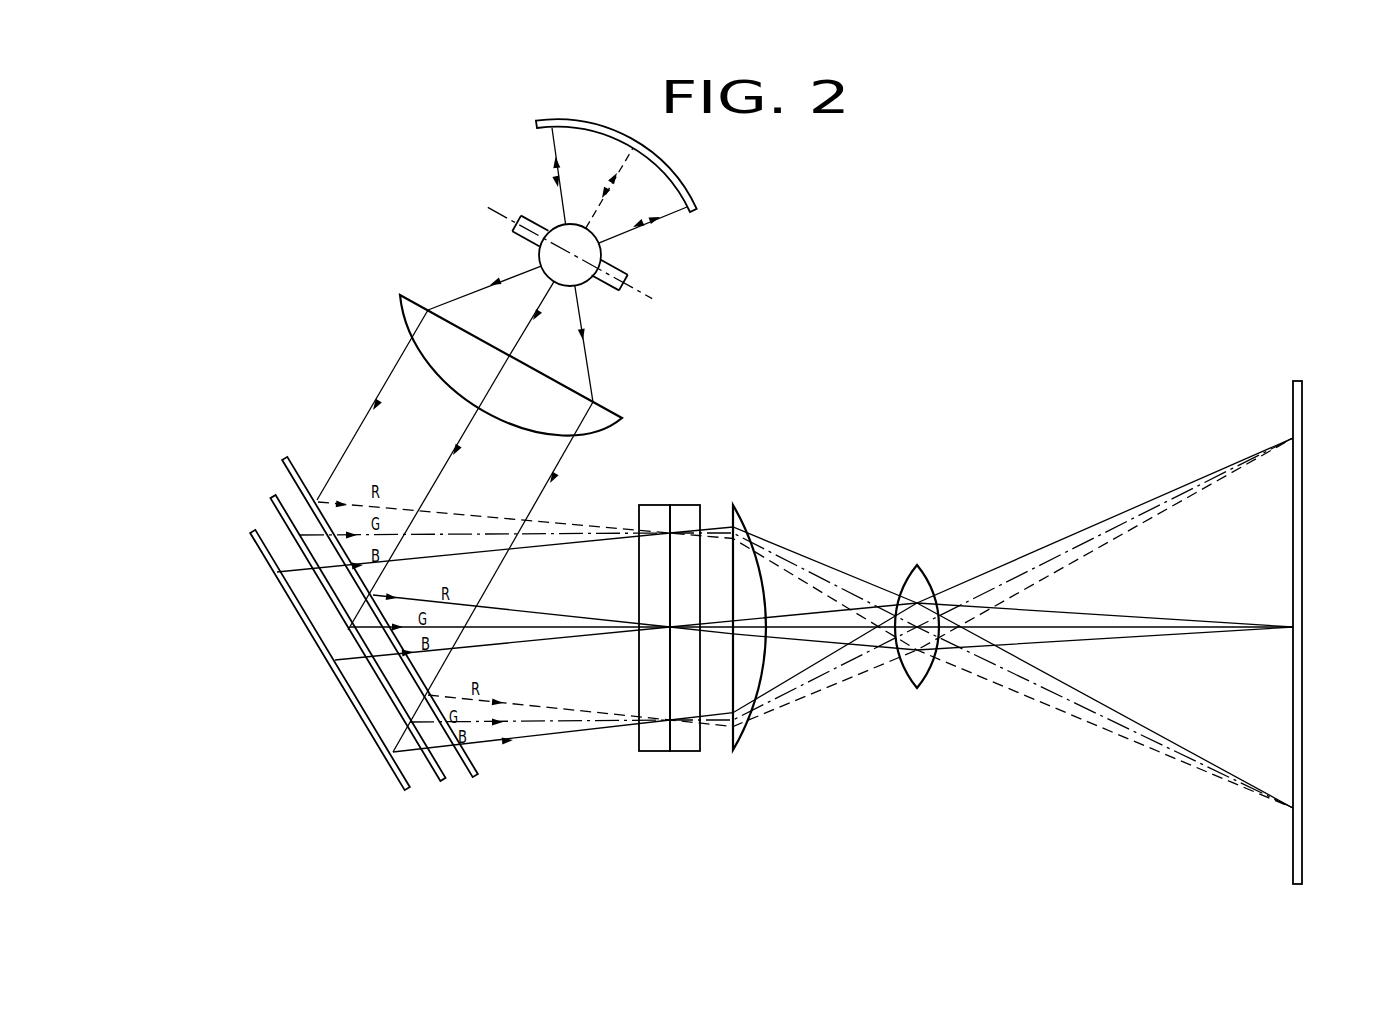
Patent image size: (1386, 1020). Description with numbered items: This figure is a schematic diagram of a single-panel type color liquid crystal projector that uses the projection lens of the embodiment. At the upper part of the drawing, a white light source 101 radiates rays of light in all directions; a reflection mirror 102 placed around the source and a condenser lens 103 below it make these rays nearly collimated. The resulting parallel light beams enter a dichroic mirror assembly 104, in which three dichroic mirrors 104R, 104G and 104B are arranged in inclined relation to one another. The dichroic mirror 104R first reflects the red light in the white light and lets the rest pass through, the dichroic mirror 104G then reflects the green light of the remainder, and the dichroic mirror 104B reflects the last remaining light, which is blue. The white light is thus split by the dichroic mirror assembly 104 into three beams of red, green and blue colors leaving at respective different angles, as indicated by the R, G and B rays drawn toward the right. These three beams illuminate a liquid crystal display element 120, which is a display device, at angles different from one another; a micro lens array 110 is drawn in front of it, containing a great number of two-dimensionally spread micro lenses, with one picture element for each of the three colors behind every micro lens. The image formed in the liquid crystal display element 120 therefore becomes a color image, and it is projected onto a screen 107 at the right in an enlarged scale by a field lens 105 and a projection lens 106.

The white light source 101 is at (530, 213).
The reflection mirror 102 is at (672, 160).
The condenser lens 103 is at (408, 334).
The dichroic mirror assembly 104 is at (250, 328).
The dichroic mirror 104R is at (292, 457).
The dichroic mirror 104G is at (272, 497).
The dichroic mirror 104B is at (250, 533).
The field lens 105 is at (737, 753).
The projection lens 106 is at (916, 690).
The screen 107 is at (1302, 760).
The micro lens array 110 is at (655, 753).
The liquid crystal display element 120 is at (687, 753).